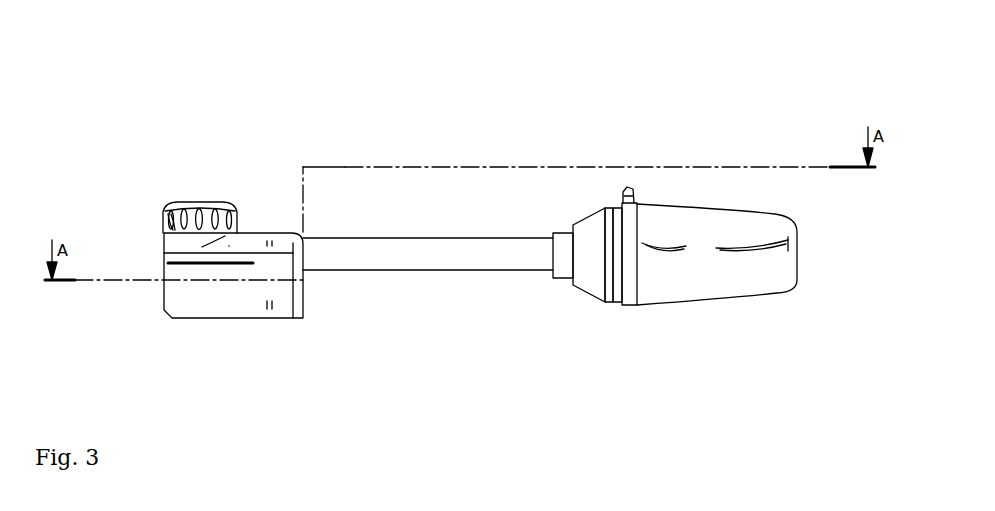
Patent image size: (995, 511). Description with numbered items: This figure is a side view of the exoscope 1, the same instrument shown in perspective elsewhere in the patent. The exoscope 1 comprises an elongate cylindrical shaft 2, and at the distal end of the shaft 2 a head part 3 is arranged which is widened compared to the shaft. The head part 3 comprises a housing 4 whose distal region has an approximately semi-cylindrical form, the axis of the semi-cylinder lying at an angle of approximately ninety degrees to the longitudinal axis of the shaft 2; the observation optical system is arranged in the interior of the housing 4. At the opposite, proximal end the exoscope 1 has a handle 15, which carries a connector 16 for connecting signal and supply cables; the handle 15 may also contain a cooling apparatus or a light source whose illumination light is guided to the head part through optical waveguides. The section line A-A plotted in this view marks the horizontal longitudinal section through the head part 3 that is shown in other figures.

The exoscope 1 is at (485, 114).
The shaft 2 is at (418, 255).
The head part 3 is at (198, 144).
The housing 4 is at (236, 303).
The handle 15 is at (683, 278).
The connector 16 is at (630, 195).